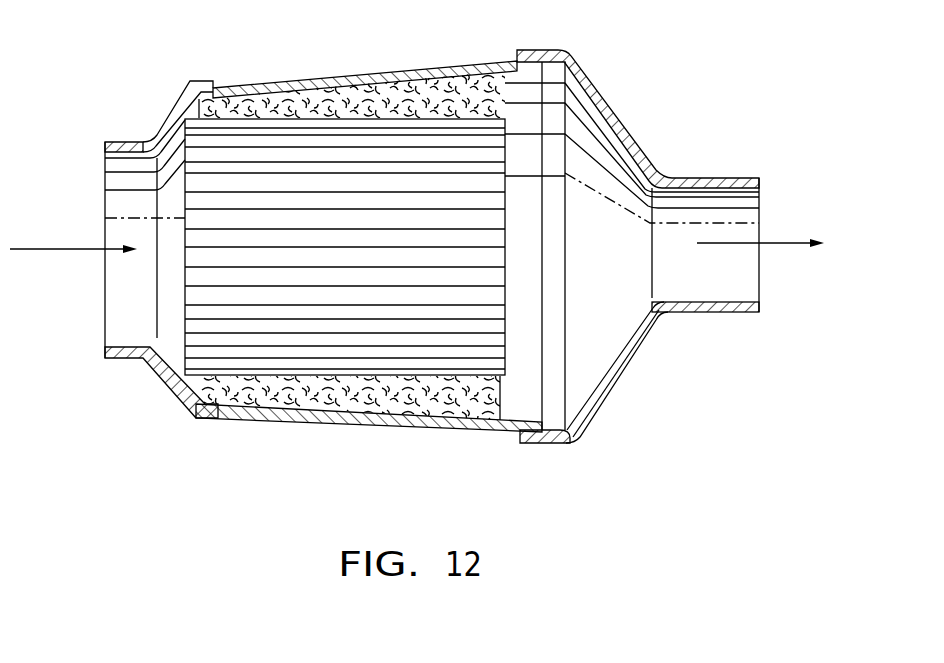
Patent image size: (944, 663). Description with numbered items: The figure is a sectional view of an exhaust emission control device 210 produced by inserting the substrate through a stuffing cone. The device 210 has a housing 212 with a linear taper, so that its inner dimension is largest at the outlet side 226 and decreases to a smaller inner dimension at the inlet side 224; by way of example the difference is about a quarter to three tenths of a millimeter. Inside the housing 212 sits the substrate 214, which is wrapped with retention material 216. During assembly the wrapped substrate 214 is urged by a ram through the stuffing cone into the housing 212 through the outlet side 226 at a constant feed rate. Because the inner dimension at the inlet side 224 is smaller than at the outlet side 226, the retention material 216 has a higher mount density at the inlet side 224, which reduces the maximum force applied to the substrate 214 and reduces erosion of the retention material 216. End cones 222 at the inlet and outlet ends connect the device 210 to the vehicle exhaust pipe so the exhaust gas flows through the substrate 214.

The exhaust emission control device 210 is at (274, 46).
The housing 212 is at (327, 416).
The substrate 214 is at (272, 362).
The retention material 216 is at (382, 405).
The end cone 222 is at (127, 360).
The inlet side 224 is at (86, 160).
The outlet side 226 is at (768, 200).